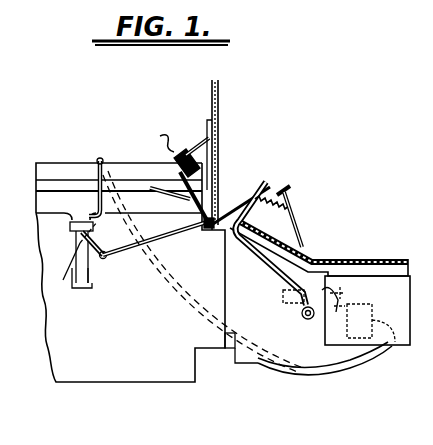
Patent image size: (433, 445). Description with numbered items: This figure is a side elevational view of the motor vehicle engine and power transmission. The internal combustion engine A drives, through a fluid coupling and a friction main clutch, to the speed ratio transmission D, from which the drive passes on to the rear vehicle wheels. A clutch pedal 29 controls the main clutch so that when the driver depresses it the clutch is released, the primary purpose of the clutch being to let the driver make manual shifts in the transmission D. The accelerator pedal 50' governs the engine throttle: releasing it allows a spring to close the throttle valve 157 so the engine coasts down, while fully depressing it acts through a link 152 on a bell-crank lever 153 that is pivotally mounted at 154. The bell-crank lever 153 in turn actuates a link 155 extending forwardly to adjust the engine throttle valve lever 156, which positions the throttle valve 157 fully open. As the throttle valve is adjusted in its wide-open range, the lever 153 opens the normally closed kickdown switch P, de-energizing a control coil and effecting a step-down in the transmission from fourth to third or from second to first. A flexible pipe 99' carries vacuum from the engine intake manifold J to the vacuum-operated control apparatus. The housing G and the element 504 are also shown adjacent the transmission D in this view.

The internal combustion engine A is at (50, 163).
The engine intake manifold J is at (67, 196).
The kickdown switch P is at (186, 152).
The speed ratio transmission D is at (400, 262).
The gear housing G is at (383, 300).
The clutch pedal 29 is at (286, 191).
The accelerator pedal 50' is at (315, 219).
The toothed segment 504 is at (293, 220).
The flexible pipe 99' is at (203, 272).
The link 152 is at (244, 212).
The bell-crank lever 153 is at (152, 186).
The pivot 154 is at (222, 180).
The link 155 is at (177, 225).
The engine throttle valve lever 156 is at (73, 268).
The throttle valve 157 is at (72, 242).